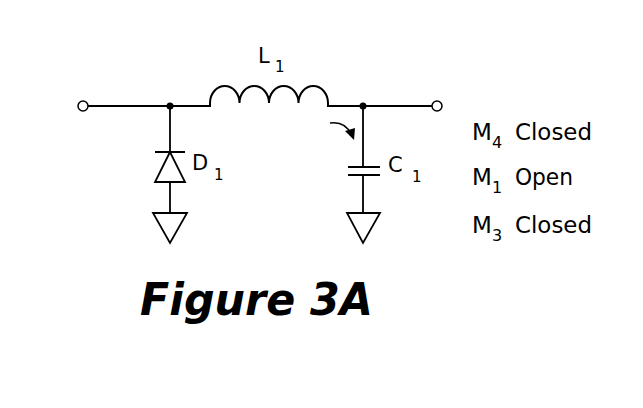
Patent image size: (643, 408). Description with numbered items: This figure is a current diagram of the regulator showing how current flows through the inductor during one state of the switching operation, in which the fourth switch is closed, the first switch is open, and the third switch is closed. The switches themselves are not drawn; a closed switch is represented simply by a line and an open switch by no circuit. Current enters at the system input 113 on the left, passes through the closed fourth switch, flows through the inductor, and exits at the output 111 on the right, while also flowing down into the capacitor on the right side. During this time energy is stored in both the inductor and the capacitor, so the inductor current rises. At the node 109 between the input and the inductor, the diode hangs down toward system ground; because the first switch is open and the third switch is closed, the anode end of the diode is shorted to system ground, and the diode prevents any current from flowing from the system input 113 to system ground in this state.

The system input 113 is at (188, 87).
The output 111 is at (335, 87).
The node 109 is at (167, 108).